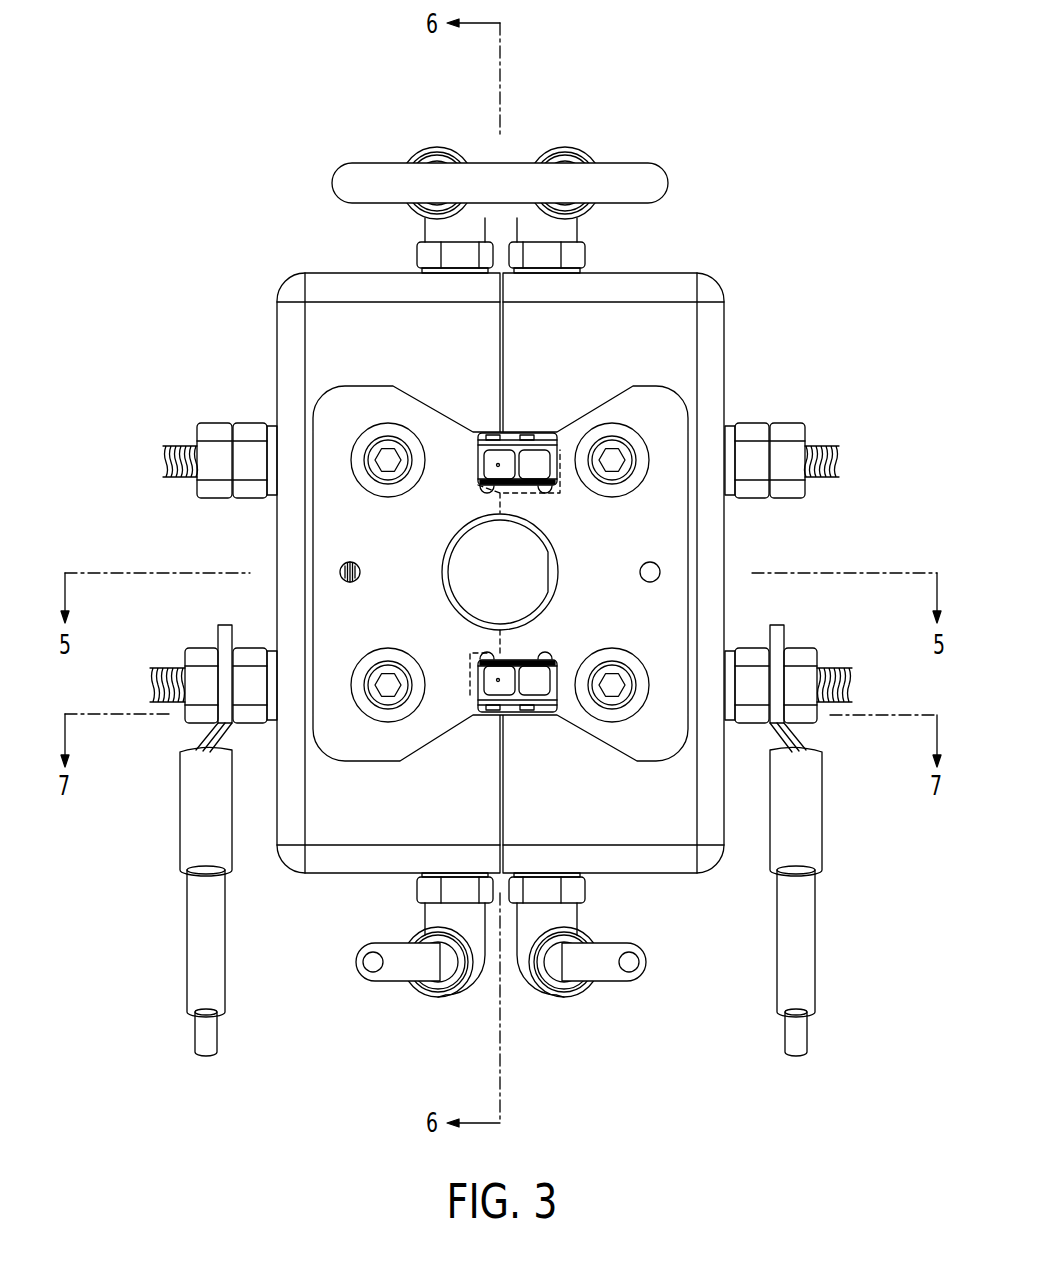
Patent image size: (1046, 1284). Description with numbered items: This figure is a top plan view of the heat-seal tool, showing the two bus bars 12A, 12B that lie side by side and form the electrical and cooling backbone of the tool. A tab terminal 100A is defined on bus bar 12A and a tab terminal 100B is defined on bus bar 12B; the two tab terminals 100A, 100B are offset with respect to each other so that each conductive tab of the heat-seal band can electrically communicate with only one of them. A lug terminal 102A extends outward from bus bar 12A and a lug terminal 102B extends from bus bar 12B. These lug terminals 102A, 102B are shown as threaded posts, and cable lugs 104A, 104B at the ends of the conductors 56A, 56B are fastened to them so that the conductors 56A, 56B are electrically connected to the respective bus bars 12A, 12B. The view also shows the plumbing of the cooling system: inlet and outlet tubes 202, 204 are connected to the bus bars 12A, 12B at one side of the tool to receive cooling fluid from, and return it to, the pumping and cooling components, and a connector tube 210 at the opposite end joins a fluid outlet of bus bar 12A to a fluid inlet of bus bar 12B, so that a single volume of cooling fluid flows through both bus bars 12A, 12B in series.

The connector tube 210 is at (626, 176).
The bus bar 12A is at (333, 287).
The bus bar 12B is at (670, 287).
The tab terminal 100A is at (470, 655).
The tab terminal 100B is at (562, 480).
The lug terminal 102A is at (163, 457).
The lug terminal 102B is at (839, 465).
The cable lug 104A is at (200, 741).
The cable lug 104B is at (800, 742).
The conductor 56A is at (193, 946).
The conductor 56B is at (800, 967).
The inlet tube 202 is at (397, 973).
The outlet tube 204 is at (598, 973).